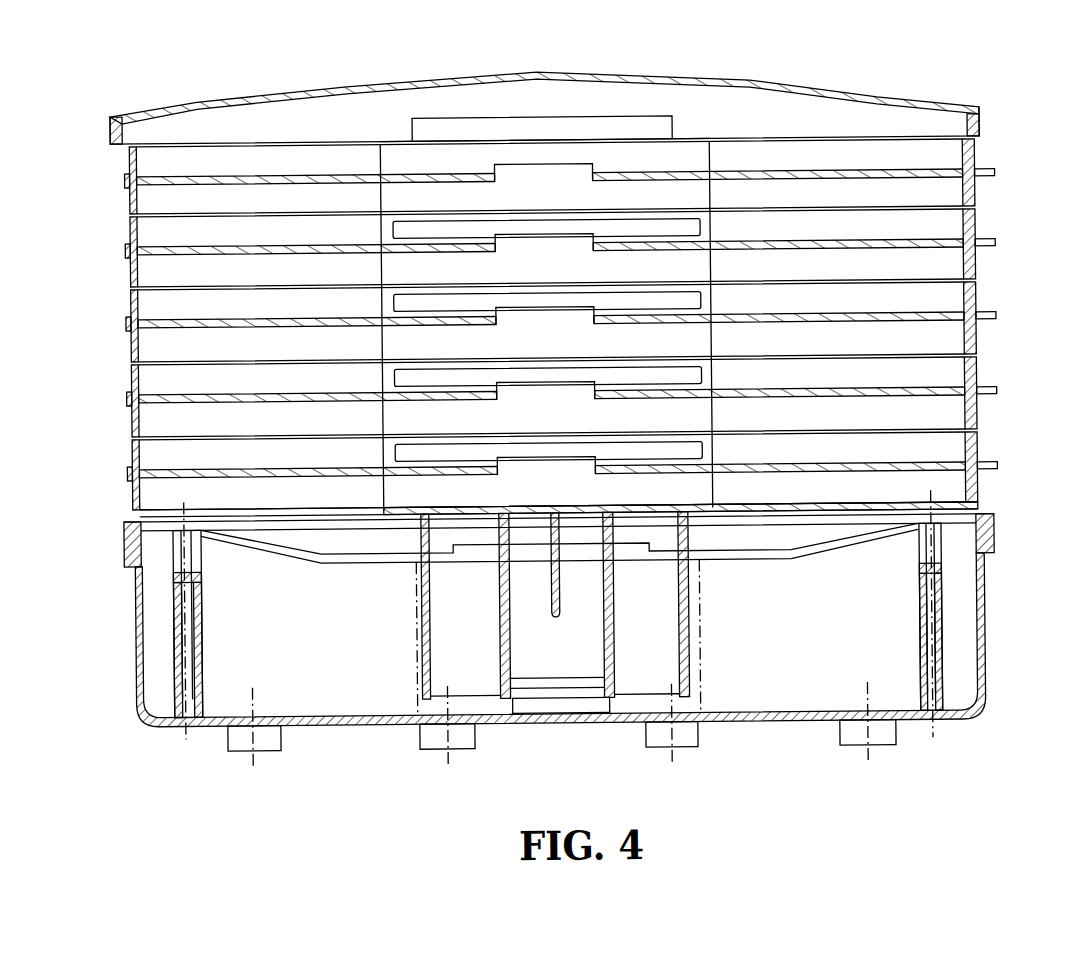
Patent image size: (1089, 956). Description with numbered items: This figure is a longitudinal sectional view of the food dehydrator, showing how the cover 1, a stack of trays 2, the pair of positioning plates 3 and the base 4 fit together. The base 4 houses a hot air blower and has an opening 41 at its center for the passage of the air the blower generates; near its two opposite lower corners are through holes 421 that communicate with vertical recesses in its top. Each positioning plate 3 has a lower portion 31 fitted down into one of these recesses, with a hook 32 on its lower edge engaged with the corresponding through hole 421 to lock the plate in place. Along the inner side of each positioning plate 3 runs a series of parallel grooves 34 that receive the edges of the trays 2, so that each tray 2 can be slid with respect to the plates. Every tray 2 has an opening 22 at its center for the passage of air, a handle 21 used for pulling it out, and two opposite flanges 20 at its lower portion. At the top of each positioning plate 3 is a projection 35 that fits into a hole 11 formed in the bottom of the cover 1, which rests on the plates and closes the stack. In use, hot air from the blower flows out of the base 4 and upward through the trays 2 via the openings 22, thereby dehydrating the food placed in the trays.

The cover 1 is at (830, 95).
The hole 11 is at (475, 124).
The tray 2 is at (981, 200).
The flange 20 is at (131, 183).
The handle 21 is at (988, 174).
The opening 22 is at (543, 174).
The positioning plate 3 is at (690, 197).
The lower portion 31 is at (422, 586).
The hook 32 is at (550, 699).
The groove 34 is at (393, 203).
The projection 35 is at (637, 133).
The base 4 is at (983, 641).
The opening 41 is at (482, 553).
The through hole 421 is at (592, 708).